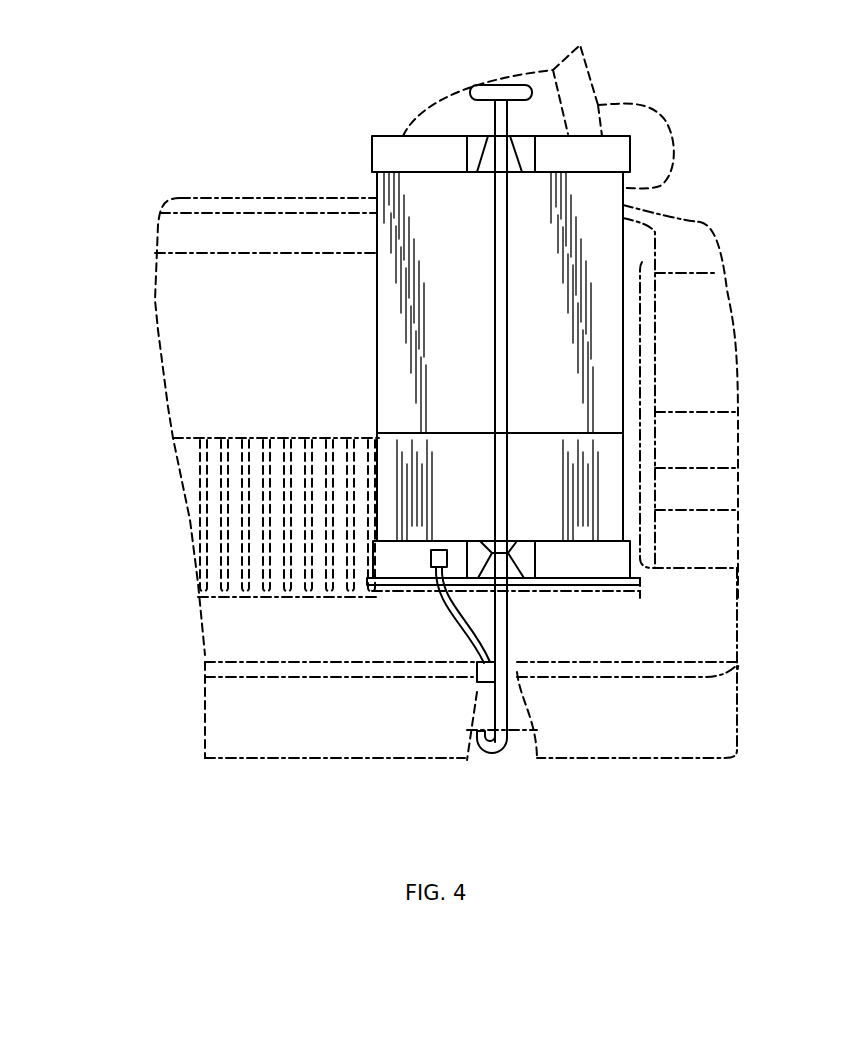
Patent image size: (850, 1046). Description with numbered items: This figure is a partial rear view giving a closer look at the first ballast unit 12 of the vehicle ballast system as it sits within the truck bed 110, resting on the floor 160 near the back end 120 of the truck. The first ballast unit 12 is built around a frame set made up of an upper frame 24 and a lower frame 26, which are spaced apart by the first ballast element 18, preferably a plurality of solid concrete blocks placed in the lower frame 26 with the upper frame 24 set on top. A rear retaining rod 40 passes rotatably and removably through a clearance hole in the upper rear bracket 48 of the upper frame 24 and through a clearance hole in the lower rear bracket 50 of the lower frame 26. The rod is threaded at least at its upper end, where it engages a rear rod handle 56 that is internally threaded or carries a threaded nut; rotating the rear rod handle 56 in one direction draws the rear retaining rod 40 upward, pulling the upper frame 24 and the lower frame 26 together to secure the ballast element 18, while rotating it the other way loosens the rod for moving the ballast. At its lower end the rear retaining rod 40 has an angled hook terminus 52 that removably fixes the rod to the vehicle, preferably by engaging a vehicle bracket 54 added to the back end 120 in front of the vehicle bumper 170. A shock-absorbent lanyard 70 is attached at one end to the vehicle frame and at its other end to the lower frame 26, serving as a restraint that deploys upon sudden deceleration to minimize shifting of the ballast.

The first ballast unit 12 is at (378, 72).
The first ballast element 18 is at (636, 356).
The upper frame 24 is at (372, 150).
The lower frame 26 is at (632, 556).
The rear retaining rod 40 is at (497, 330).
The upper rear bracket 48 is at (470, 140).
The lower rear bracket 50 is at (490, 540).
The hook terminus 52 is at (487, 752).
The vehicle bracket 54 is at (468, 692).
The rear rod handle 56 is at (512, 85).
The lanyard 70 is at (450, 605).
The truck bed 110 is at (193, 335).
The back end 120 is at (700, 222).
The floor 160 is at (272, 603).
The vehicle bumper 170 is at (683, 698).